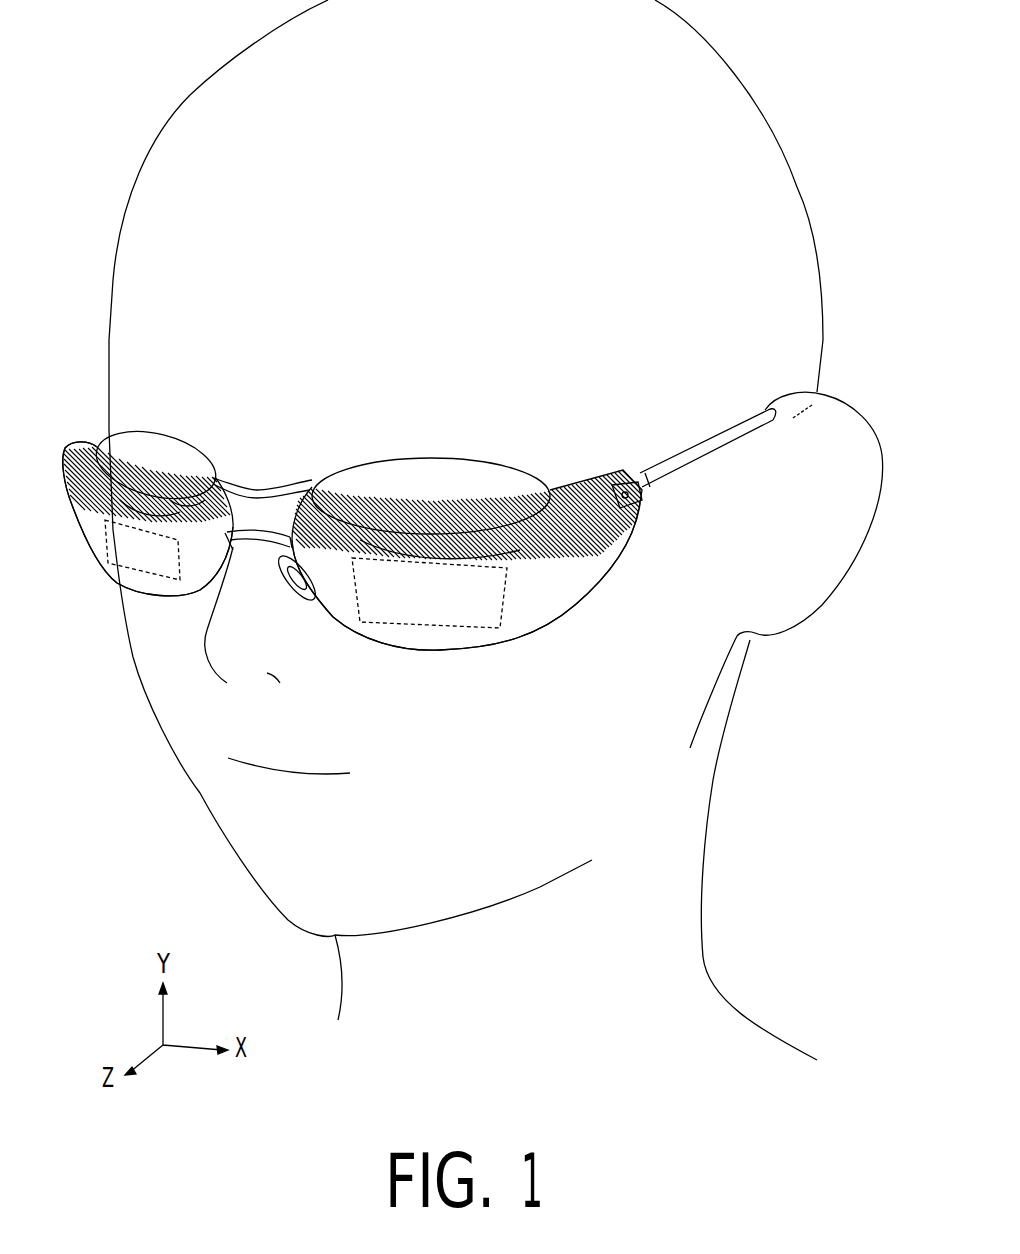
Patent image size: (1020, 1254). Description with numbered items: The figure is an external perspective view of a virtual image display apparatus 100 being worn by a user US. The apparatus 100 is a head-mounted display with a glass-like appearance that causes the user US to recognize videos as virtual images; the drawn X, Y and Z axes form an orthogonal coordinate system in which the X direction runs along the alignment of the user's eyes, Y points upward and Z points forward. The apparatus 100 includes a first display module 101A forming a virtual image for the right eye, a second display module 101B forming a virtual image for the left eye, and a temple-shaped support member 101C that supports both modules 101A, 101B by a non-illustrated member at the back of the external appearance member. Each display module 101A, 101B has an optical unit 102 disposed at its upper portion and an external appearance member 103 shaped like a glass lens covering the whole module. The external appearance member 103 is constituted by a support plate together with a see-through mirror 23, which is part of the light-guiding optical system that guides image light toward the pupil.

The user US is at (737, 77).
The virtual image display apparatus 100 is at (370, 346).
The first display module 101A is at (208, 450).
The second display module 101B is at (486, 456).
The support member 101C is at (667, 470).
The optical unit 102 is at (148, 447).
The external appearance member 103 is at (155, 597).
The see-through mirror 23 is at (140, 575).